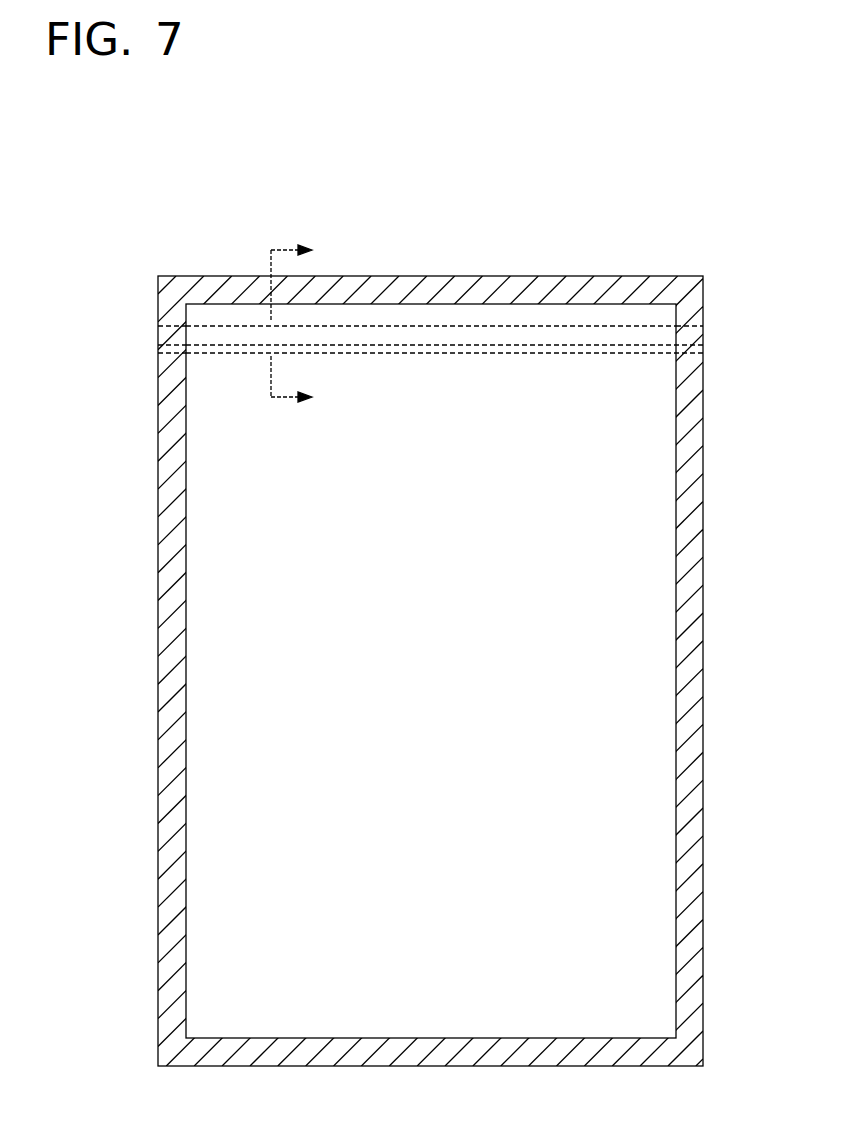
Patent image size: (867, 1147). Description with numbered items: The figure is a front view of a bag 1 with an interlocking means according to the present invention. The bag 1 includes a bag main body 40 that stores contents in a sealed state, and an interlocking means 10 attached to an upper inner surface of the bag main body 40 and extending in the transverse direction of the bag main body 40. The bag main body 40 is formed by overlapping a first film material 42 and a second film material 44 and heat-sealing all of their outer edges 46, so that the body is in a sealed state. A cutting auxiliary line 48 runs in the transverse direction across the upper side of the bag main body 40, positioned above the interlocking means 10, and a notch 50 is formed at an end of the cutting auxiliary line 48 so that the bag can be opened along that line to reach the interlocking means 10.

The bag 1 is at (571, 204).
The interlocking means 10 is at (636, 343).
The bag main body 40 is at (704, 655).
The first film material 42 is at (208, 843).
The second film material 44 is at (208, 755).
The outer edges 46 is at (690, 943).
The cutting auxiliary line 48 is at (472, 325).
The notch 50 is at (167, 326).